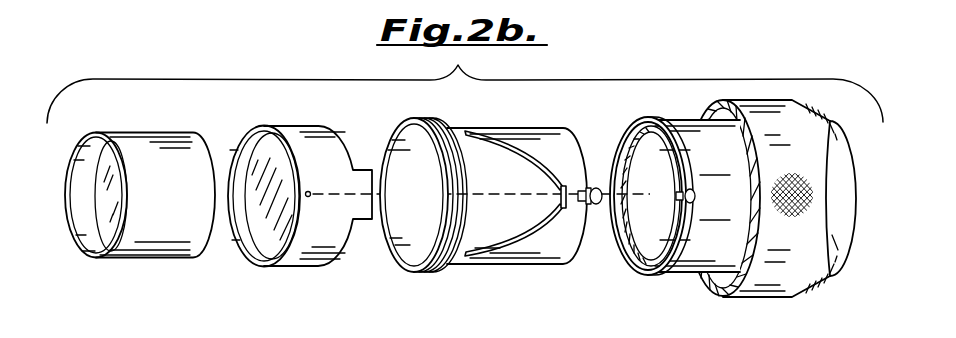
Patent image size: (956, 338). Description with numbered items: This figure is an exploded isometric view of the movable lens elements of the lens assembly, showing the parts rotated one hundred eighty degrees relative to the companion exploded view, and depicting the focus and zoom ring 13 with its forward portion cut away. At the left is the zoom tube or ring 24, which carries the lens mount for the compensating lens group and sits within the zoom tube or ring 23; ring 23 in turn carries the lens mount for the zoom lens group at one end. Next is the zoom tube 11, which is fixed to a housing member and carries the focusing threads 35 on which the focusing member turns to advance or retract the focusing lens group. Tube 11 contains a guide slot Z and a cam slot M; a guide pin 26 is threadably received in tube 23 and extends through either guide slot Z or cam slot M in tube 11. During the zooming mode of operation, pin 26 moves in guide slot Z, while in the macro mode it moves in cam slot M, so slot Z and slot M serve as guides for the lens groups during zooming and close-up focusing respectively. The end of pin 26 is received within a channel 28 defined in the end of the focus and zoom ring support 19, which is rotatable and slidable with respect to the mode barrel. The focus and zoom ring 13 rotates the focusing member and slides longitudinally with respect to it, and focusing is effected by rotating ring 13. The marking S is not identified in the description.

The zoom tube or ring 24 is at (145, 148).
The zoom tube or ring 23 is at (293, 137).
The zoom tube 11 is at (513, 137).
The focusing threads 35 is at (458, 196).
The cam slot M is at (548, 172).
The apex slit S is at (560, 196).
The guide slot Z is at (529, 235).
The focus and zoom ring support 19 is at (675, 127).
The channel 28 is at (625, 235).
The guide pin 26 is at (678, 195).
The focus and zoom ring 13 is at (804, 131).